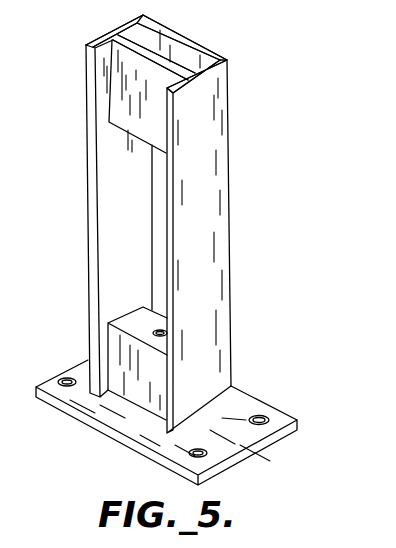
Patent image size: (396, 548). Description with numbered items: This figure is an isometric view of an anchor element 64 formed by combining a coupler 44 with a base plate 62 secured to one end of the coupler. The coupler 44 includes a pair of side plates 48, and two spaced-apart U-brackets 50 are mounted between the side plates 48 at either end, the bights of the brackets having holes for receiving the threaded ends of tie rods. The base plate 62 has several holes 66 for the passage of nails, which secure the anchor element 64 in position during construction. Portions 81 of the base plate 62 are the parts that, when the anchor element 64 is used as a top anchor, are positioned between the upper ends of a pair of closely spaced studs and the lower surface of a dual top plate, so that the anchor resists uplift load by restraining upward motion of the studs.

The coupler 44 is at (207, 135).
The side plates 48 is at (212, 215).
The U-brackets 50 is at (188, 62).
The anchor element 64 is at (198, 224).
The portions of base plate 81 is at (86, 386).
The base plate 62 is at (262, 410).
The holes 66 is at (254, 422).